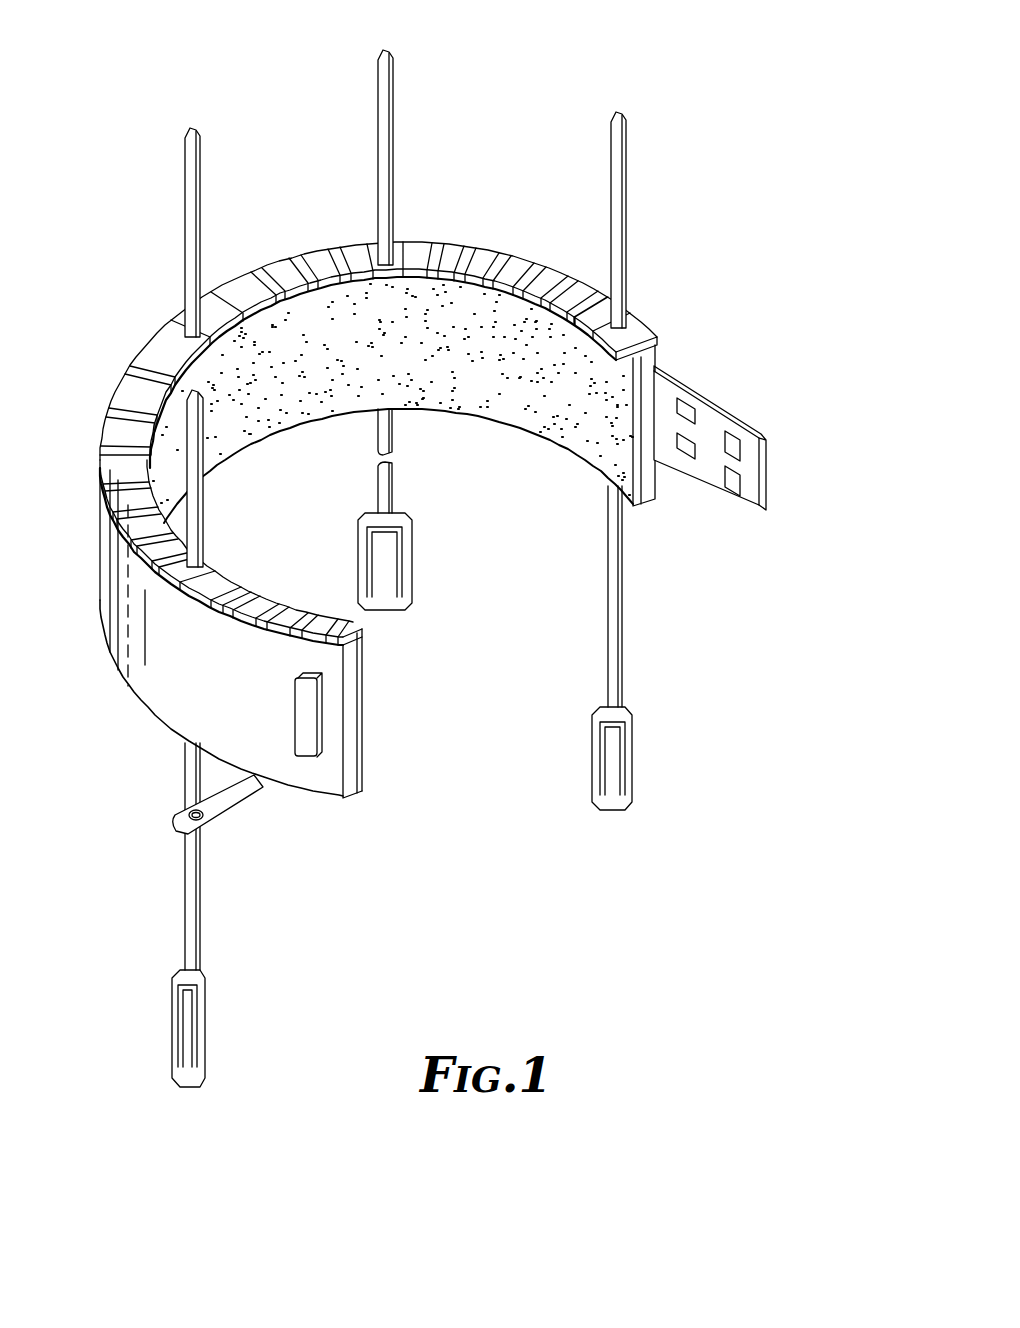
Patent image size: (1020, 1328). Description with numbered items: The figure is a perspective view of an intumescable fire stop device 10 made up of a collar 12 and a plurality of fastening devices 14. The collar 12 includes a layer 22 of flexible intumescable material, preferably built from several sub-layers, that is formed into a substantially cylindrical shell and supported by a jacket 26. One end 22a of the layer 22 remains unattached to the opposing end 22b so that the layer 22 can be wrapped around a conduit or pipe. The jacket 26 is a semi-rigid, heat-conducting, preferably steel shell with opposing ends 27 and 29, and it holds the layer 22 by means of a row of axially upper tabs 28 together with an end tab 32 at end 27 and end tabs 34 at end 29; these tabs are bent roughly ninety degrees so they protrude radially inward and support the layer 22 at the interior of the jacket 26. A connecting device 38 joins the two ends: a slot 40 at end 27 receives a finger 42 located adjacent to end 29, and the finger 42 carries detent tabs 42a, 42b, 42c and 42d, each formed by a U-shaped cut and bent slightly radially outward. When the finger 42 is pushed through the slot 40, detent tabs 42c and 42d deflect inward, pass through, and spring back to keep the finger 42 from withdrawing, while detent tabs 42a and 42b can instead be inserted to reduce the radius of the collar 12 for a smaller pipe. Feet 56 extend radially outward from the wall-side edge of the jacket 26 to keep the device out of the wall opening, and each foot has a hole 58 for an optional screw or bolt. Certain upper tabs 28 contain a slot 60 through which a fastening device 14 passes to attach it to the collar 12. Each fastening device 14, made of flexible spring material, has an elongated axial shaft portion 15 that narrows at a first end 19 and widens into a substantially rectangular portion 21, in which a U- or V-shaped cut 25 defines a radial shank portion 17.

The fire stop device 10 is at (675, 325).
The collar 12 is at (672, 348).
The fastening device 14 is at (396, 117).
The elongated axial shaft portion 15 is at (391, 458).
The radial shank portion 17 is at (390, 565).
The first end 19 is at (393, 54).
The substantially rectangular portion 21 is at (396, 610).
The layer of flexible intumescable material 22 is at (540, 430).
The end of layer 22a is at (655, 470).
The opposing end of layer 22b is at (362, 706).
The cut 25 is at (398, 578).
The jacket 26 is at (103, 607).
The end of jacket 27 is at (358, 735).
The upper tabs 28 is at (520, 262).
The opposing end of jacket 29 is at (658, 392).
The end tab 32 is at (348, 768).
The end tabs 34 is at (658, 366).
The connecting device 38 is at (760, 418).
The slot 40 is at (323, 765).
The finger 42 is at (742, 468).
The detent tab 42a is at (686, 447).
The detent tab 42b is at (686, 412).
The detent tab 42c is at (738, 448).
The detent tab 42d is at (738, 487).
The feet 56 is at (222, 827).
The hole 58 is at (212, 813).
The slot 60 is at (383, 270).